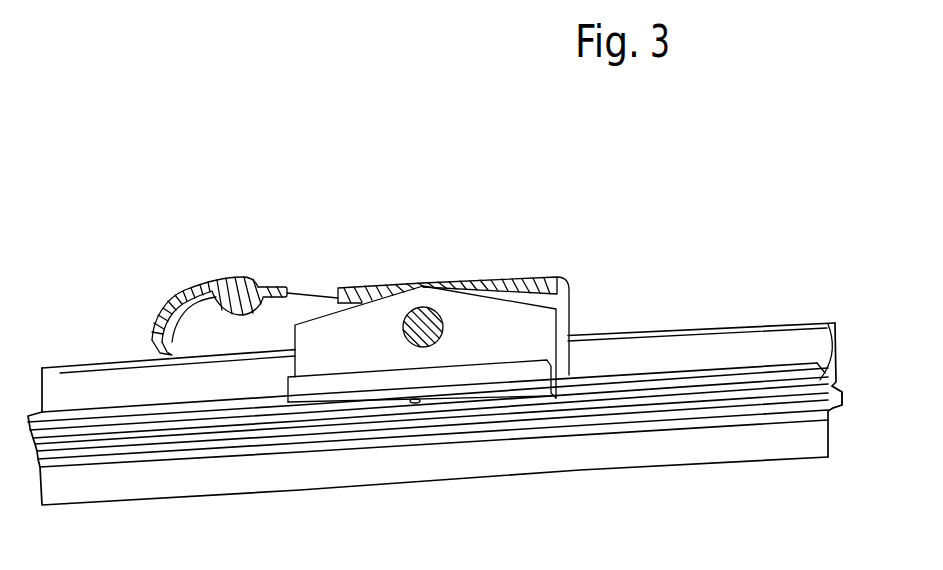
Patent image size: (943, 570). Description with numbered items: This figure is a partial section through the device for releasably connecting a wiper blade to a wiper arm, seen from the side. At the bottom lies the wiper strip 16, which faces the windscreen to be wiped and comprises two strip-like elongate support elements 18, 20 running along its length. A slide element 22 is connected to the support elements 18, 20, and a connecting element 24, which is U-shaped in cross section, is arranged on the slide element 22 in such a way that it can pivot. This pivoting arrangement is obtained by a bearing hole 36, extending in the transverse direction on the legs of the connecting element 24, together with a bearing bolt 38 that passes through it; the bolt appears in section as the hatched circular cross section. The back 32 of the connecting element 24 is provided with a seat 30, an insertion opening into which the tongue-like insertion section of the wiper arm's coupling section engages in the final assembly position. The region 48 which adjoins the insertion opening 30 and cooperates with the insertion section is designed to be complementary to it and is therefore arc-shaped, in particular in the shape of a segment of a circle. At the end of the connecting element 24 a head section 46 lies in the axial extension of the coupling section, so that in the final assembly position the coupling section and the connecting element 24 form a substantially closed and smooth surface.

The wiper strip 16 is at (647, 445).
The support element 18 is at (808, 365).
The support element 20 is at (842, 400).
The slide element 22 is at (537, 332).
The connecting element 24 is at (203, 333).
The seat 30 is at (313, 293).
The back 32 is at (530, 287).
The bearing hole 36 is at (417, 308).
The bearing bolt 38 is at (441, 309).
The head section 46 is at (185, 288).
The region 48 is at (277, 292).